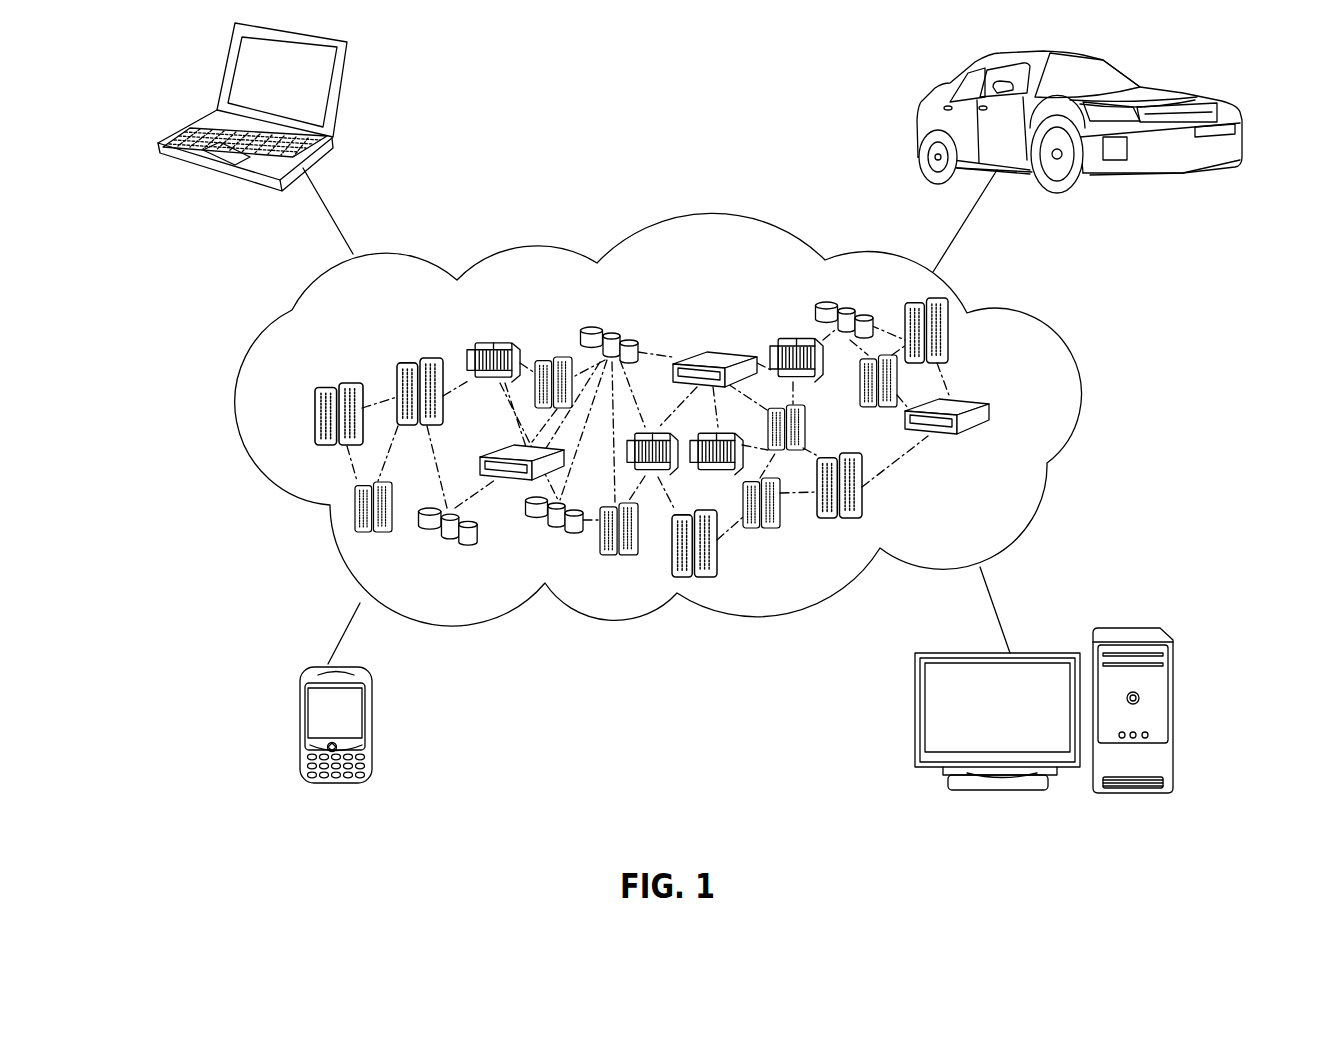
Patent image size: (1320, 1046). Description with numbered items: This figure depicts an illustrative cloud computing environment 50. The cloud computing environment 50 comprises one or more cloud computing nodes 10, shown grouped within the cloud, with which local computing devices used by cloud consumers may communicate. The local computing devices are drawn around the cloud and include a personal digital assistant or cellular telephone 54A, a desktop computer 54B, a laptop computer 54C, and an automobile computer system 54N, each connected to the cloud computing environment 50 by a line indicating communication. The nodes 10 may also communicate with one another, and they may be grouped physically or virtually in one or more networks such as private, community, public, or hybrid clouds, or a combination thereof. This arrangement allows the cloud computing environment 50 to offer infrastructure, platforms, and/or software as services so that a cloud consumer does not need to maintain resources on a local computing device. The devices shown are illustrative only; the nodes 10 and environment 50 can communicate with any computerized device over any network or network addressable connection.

The cloud computing nodes 10 is at (1028, 413).
The cloud computing environment 50 is at (1055, 327).
The personal digital assistant or cellular telephone 54A is at (300, 728).
The desktop computer 54B is at (1137, 627).
The laptop computer 54C is at (347, 92).
The automobile computer system 54N is at (925, 102).